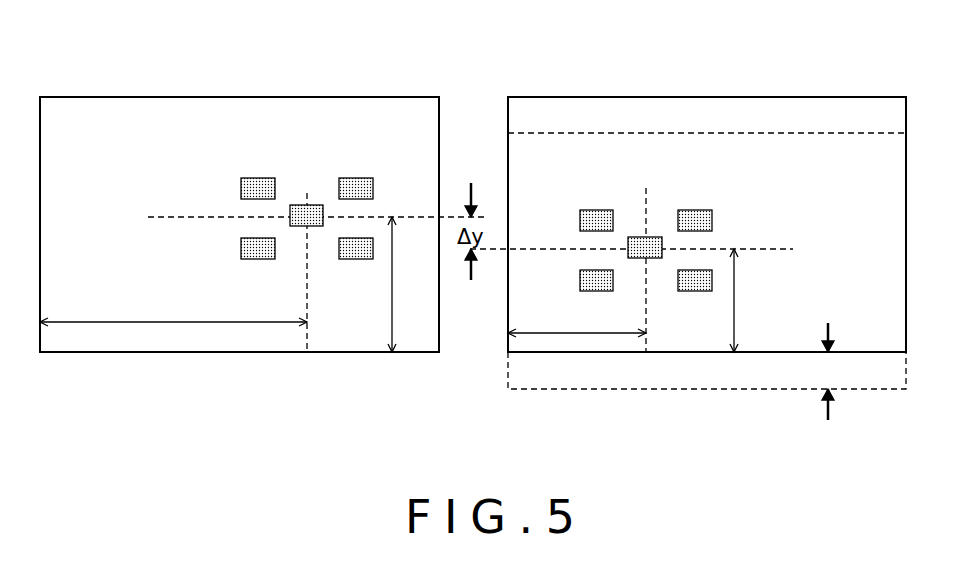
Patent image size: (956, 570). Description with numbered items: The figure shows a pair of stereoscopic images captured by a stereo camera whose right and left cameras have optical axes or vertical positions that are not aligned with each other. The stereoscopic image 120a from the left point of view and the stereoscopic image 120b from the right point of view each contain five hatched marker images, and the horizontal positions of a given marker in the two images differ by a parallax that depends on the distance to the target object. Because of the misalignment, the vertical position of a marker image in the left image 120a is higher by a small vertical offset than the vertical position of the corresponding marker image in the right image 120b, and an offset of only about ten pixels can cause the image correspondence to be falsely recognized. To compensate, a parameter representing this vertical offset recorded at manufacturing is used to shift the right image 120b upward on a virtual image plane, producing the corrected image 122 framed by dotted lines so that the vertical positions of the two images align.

The stereoscopic image from the left point of view 120a is at (232, 97).
The stereoscopic image from the right point of view 120b is at (706, 97).
The corrected image 122 is at (611, 389).